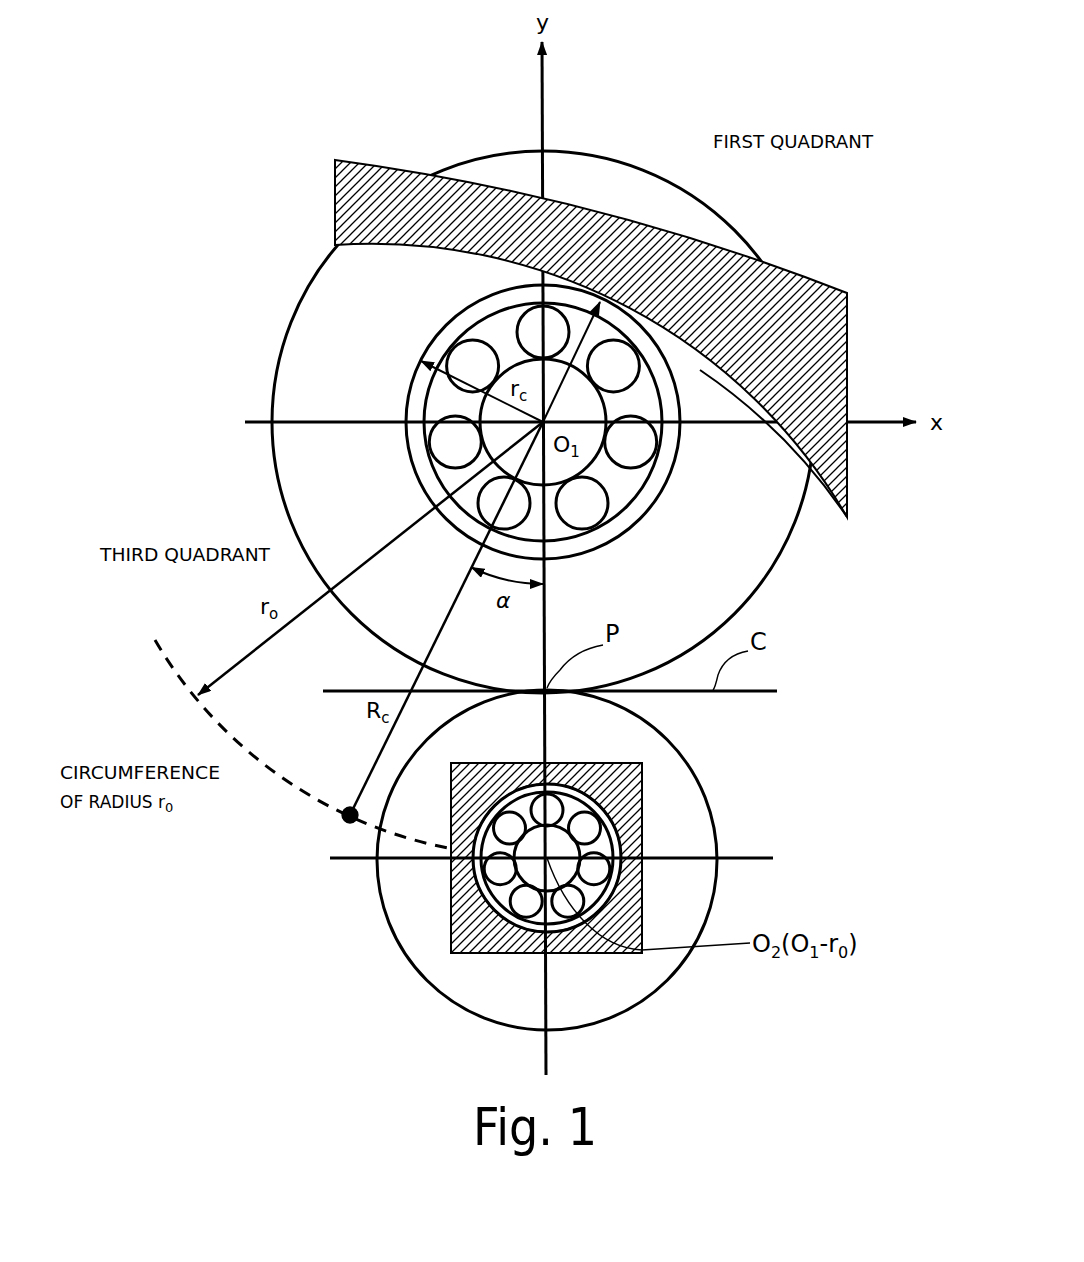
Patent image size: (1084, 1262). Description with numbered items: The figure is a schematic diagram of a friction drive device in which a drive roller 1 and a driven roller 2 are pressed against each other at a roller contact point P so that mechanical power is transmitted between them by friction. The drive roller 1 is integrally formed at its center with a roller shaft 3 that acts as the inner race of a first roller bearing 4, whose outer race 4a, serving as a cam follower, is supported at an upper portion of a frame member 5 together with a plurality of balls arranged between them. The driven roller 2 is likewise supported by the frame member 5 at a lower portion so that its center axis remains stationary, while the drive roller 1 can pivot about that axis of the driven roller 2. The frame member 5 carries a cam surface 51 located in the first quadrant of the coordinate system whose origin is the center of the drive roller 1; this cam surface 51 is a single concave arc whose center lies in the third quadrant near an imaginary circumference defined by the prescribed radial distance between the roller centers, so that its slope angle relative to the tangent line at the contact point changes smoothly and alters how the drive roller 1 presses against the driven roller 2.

The drive roller 1 is at (298, 294).
The driven roller 2 is at (394, 942).
The roller shaft 3 is at (577, 413).
The first roller bearing 4 is at (507, 422).
The outer race 4a is at (448, 341).
The frame member 5 is at (641, 764).
The cam surface 51 is at (793, 441).